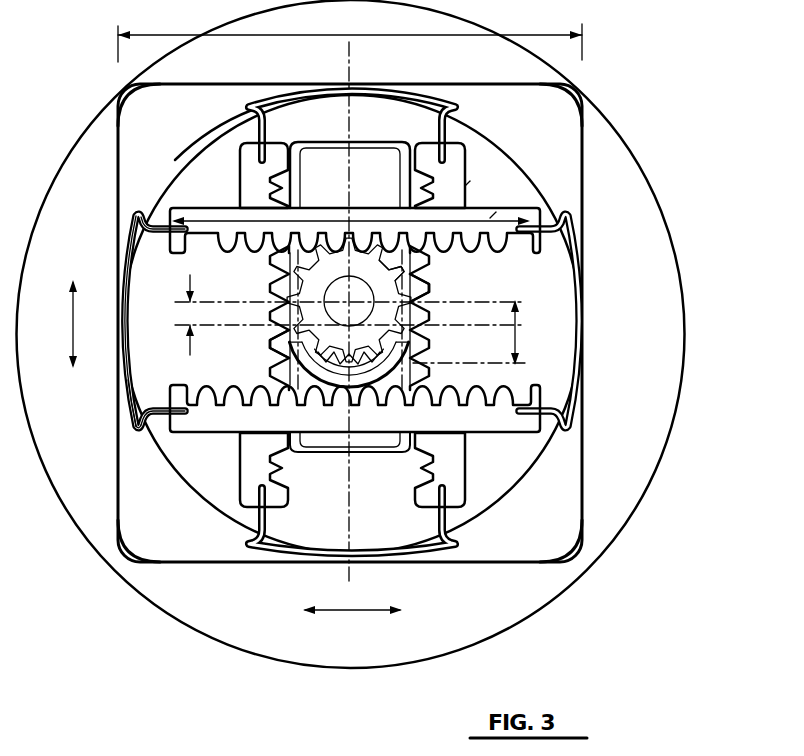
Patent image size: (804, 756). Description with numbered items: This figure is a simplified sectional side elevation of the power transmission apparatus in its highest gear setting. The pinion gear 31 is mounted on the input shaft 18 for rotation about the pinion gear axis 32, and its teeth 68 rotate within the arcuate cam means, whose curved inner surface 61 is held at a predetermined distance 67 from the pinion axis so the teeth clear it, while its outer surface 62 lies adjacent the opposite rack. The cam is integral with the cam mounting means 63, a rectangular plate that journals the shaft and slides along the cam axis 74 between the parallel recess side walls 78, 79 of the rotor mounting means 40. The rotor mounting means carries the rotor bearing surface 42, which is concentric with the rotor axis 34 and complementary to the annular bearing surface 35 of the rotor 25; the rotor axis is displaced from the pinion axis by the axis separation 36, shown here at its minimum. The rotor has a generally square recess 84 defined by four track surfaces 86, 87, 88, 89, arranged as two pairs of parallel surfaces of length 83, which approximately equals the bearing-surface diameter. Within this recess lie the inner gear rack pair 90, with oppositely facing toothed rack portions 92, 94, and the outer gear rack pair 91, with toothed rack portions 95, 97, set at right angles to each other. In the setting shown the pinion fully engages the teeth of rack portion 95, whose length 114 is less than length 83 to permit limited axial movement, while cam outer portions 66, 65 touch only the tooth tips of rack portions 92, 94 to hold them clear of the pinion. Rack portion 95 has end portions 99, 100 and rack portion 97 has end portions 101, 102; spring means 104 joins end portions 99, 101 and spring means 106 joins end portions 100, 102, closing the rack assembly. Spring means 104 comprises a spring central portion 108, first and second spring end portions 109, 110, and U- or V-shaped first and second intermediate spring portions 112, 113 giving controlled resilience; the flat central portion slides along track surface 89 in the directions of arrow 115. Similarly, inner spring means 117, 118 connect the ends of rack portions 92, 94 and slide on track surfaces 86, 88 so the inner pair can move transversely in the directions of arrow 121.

The input shaft 18 is at (268, 283).
The rotor 25 is at (640, 176).
The pinion gear 31 is at (393, 276).
The pinion gear axis 32 is at (428, 288).
The rotor axis 34 is at (396, 388).
The annular bearing surface 35 is at (483, 150).
The axis separation 36 is at (188, 286).
The rotor mounting means 40 is at (211, 167).
The rotor bearing surface 42 is at (226, 126).
The inner surface 61 is at (282, 343).
The outer surface 62 is at (313, 408).
The cam mounting means 63 is at (372, 440).
The cam outer portion 65 is at (431, 352).
The cam outer portion 66 is at (268, 360).
The predetermined distance 67 is at (519, 333).
The teeth 68 is at (336, 380).
The cam axis 74 is at (348, 530).
The recess side wall 78 is at (298, 172).
The recess side wall 79 is at (406, 180).
The length 83 is at (363, 32).
The square recess 84 is at (557, 106).
The track surface 86 is at (496, 86).
The track surface 87 is at (581, 488).
The track surface 88 is at (199, 557).
The track surface 89 is at (127, 486).
The inner gear rack pair 90 is at (475, 180).
The outer gear rack pair 91 is at (523, 440).
The toothed rack portion 92 is at (254, 174).
The toothed rack portion 94 is at (424, 161).
The toothed rack portion 95 is at (498, 208).
The toothed rack portion 97 is at (374, 430).
The end portion 99 is at (182, 245).
The end portion 100 is at (523, 253).
The end portion 101 is at (183, 372).
The end portion 102 is at (522, 385).
The spring means 104 is at (121, 414).
The spring means 106 is at (577, 224).
The spring central portion 108 is at (118, 283).
The first spring end portion 109 is at (160, 186).
The second spring end portion 110 is at (175, 436).
The first intermediate spring portion 112 is at (120, 224).
The second intermediate spring portion 113 is at (145, 432).
The length 114 is at (328, 226).
The arrow 115 is at (71, 312).
The inner spring means 117 is at (252, 100).
The inner spring means 118 is at (252, 550).
The arrow 121 is at (362, 613).